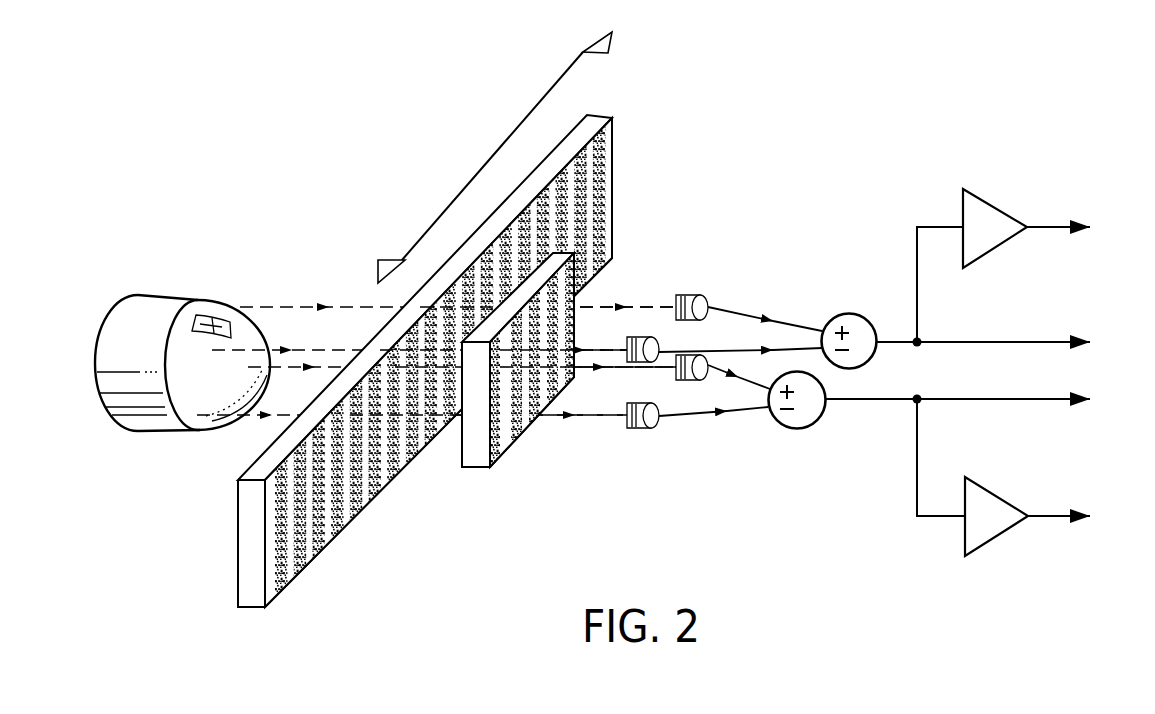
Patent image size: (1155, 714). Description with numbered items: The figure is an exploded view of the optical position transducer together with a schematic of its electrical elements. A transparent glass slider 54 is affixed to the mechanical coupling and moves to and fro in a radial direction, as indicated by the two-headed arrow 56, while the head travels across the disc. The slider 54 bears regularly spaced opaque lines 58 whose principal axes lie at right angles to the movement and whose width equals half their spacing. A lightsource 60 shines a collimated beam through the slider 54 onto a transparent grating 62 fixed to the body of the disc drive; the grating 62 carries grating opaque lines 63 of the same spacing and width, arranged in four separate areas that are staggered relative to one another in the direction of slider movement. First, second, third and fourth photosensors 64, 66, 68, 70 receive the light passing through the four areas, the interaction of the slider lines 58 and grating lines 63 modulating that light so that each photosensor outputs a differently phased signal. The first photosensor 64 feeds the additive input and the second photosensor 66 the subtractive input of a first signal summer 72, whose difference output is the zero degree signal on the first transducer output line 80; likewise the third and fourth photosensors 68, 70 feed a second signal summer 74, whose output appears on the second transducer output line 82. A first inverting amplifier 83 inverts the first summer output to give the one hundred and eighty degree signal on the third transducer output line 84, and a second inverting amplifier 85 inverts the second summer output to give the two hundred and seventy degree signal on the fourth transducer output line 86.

The slider 54 is at (604, 114).
The two-headed arrow 56 is at (537, 108).
The opaque lines 58 is at (340, 533).
The lightsource 60 is at (158, 418).
The transparent grating 62 is at (478, 468).
The grating opaque lines 63 is at (497, 452).
The first photosensor 64 is at (680, 293).
The second photosensor 66 is at (697, 355).
The third photosensor 68 is at (645, 337).
The fourth photosensor 70 is at (642, 430).
The first signal summer 72 is at (857, 313).
The second signal summer 74 is at (793, 430).
The first transducer output line 80 is at (1013, 340).
The second transducer output line 82 is at (1012, 402).
The first inverting amplifier 83 is at (997, 203).
The third transducer output line 84 is at (1052, 232).
The second inverting amplifier 85 is at (998, 540).
The fourth transducer output line 86 is at (1050, 512).